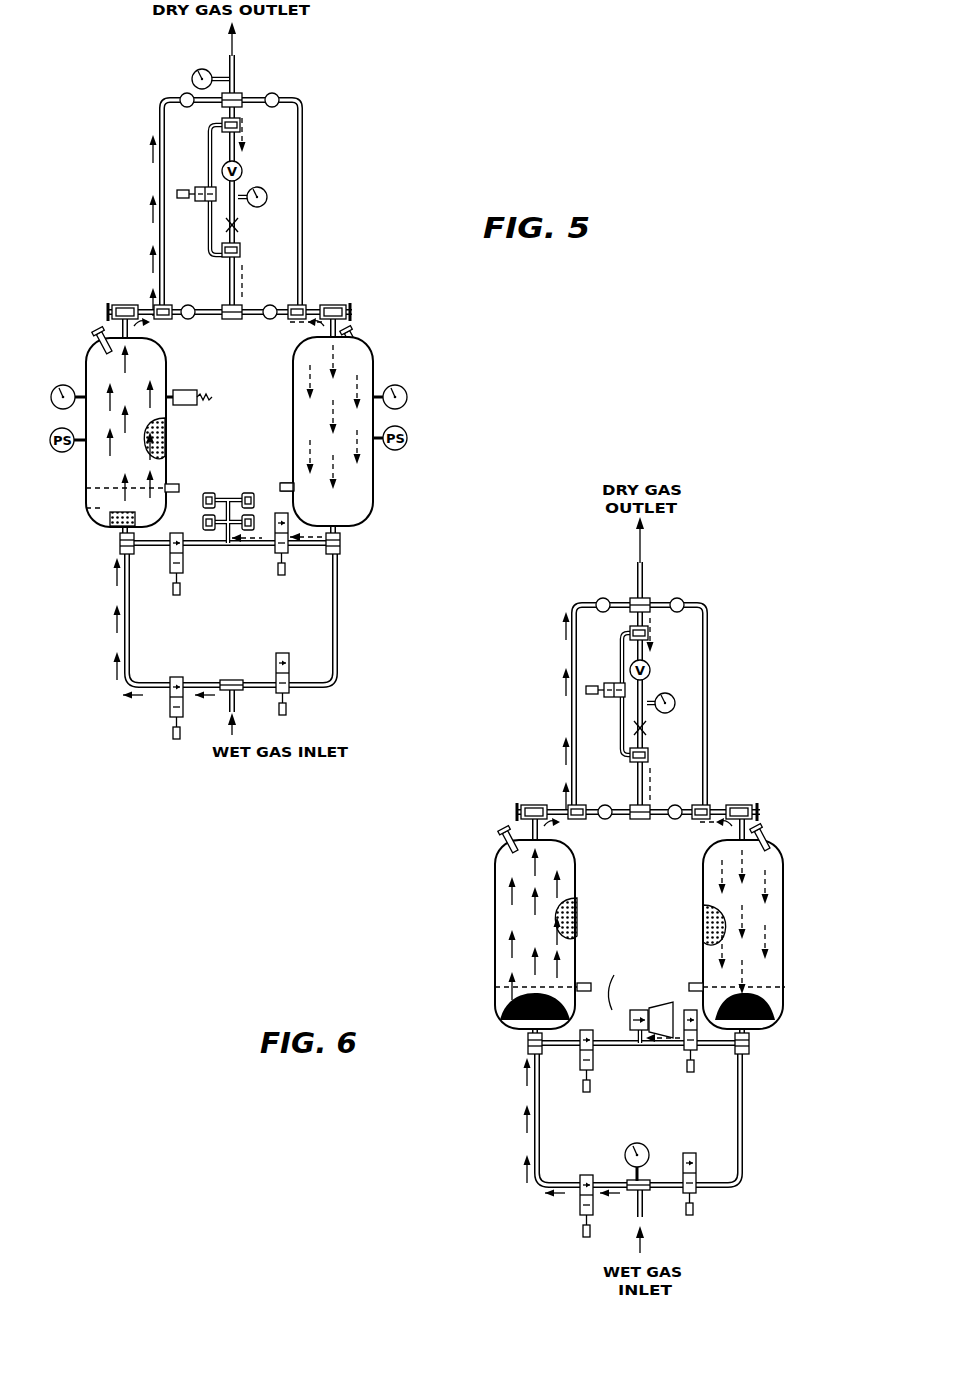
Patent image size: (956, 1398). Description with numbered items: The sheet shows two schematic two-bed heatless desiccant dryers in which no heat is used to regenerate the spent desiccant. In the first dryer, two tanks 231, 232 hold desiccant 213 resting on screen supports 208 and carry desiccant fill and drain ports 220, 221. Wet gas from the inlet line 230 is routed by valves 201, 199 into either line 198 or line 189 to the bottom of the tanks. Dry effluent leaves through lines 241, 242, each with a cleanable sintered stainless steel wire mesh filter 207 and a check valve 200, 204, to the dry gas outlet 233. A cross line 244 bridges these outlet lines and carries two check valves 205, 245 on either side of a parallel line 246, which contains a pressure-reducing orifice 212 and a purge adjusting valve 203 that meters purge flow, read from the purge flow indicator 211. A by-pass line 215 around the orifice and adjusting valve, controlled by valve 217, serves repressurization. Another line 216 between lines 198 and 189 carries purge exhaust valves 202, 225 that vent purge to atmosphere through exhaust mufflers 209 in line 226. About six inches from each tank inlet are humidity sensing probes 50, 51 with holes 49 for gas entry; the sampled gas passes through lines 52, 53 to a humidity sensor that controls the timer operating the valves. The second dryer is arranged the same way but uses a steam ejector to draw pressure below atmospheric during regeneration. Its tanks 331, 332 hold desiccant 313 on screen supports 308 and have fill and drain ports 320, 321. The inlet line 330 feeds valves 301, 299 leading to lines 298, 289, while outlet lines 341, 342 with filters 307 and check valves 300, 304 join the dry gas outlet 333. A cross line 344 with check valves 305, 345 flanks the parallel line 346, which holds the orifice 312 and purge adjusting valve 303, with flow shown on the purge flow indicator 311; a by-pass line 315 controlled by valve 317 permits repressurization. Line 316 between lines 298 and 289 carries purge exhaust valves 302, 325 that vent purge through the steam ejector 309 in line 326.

In FIG. 5, the holes 49 is at (100, 488).
In FIG. 6, the holes 49 is at (510, 988).
In FIG. 5, the humidity sensing probe 50 is at (100, 482).
In FIG. 6, the humidity sensing probe 50 is at (540, 975).
In FIG. 5, the humidity sensing probe 51 is at (318, 480).
In FIG. 6, the humidity sensing probe 51 is at (735, 978).
In FIG. 5, the line 52 is at (172, 484).
In FIG. 6, the line 52 is at (585, 983).
In FIG. 5, the line 53 is at (290, 484).
In FIG. 6, the line 53 is at (692, 983).
In FIG. 5, the line 189 is at (338, 640).
In FIG. 5, the line 198 is at (123, 636).
In FIG. 5, the valve 199 is at (300, 650).
In FIG. 5, the check valve 200 is at (183, 95).
In FIG. 5, the valve 201 is at (168, 716).
In FIG. 5, the purge exhaust valve 202 is at (170, 562).
In FIG. 5, the purge adjusting valve 203 is at (242, 171).
In FIG. 5, the check valve 204 is at (276, 94).
In FIG. 5, the check valve 205 is at (274, 285).
In FIG. 5, the cleanable filter 207 is at (112, 304).
In FIG. 5, the screen support 208 is at (88, 508).
In FIG. 5, the exhaust muffler 209 is at (262, 494).
In FIG. 5, the purge flow indicator 211 is at (266, 194).
In FIG. 5, the pressure-reducing orifice 212 is at (240, 226).
In FIG. 5, the desiccant 213 is at (165, 440).
In FIG. 5, the by-pass line 215 is at (210, 238).
In FIG. 5, the line 216 is at (206, 548).
In FIG. 5, the valve 217 is at (205, 185).
In FIG. 5, the desiccant fill port 220 is at (98, 333).
In FIG. 5, the desiccant drain port 221 is at (100, 527).
In FIG. 5, the purge exhaust valve 225 is at (276, 552).
In FIG. 5, the line 226 is at (232, 503).
In FIG. 5, the inlet line 230 is at (238, 706).
In FIG. 5, the tank 231 is at (82, 369).
In FIG. 5, the tank 232 is at (372, 356).
In FIG. 5, the dry gas outlet 233 is at (238, 62).
In FIG. 5, the line 241 is at (159, 230).
In FIG. 5, the line 242 is at (303, 212).
In FIG. 5, the cross line 244 is at (207, 320).
In FIG. 5, the check valve 245 is at (194, 285).
In FIG. 5, the parallel line 246 is at (240, 252).
In FIG. 6, the line 289 is at (744, 1108).
In FIG. 6, the line 298 is at (533, 1143).
In FIG. 6, the valve 299 is at (710, 1148).
In FIG. 6, the check valve 300 is at (600, 598).
In FIG. 6, the valve 301 is at (578, 1210).
In FIG. 6, the purge exhaust valve 302 is at (580, 1058).
In FIG. 6, the purge adjusting valve 303 is at (650, 672).
In FIG. 6, the check valve 304 is at (681, 598).
In FIG. 6, the check valve 305 is at (690, 790).
In FIG. 6, the cleanable filter 307 is at (521, 804).
In FIG. 6, the screen support 308 is at (528, 1035).
In FIG. 6, the steam ejector 309 is at (645, 998).
In FIG. 6, the purge flow indicator 311 is at (675, 700).
In FIG. 6, the pressure-reducing orifice 312 is at (648, 730).
In FIG. 6, the desiccant 313 is at (578, 912).
In FIG. 6, the by-pass line 315 is at (620, 652).
In FIG. 6, the line 316 is at (617, 1048).
In FIG. 6, the valve 317 is at (605, 682).
In FIG. 6, the desiccant fill port 320 is at (503, 832).
In FIG. 6, the desiccant drain port 321 is at (502, 1020).
In FIG. 6, the purge exhaust valve 325 is at (684, 1048).
In FIG. 6, the line 326 is at (620, 1044).
In FIG. 6, the inlet line 330 is at (645, 1212).
In FIG. 6, the tank 331 is at (490, 899).
In FIG. 6, the tank 332 is at (790, 895).
In FIG. 6, the dry gas outlet 333 is at (646, 572).
In FIG. 6, the line 341 is at (571, 723).
In FIG. 6, the line 342 is at (708, 727).
In FIG. 6, the cross line 344 is at (630, 820).
In FIG. 6, the check valve 345 is at (606, 790).
In FIG. 6, the parallel line 346 is at (648, 757).